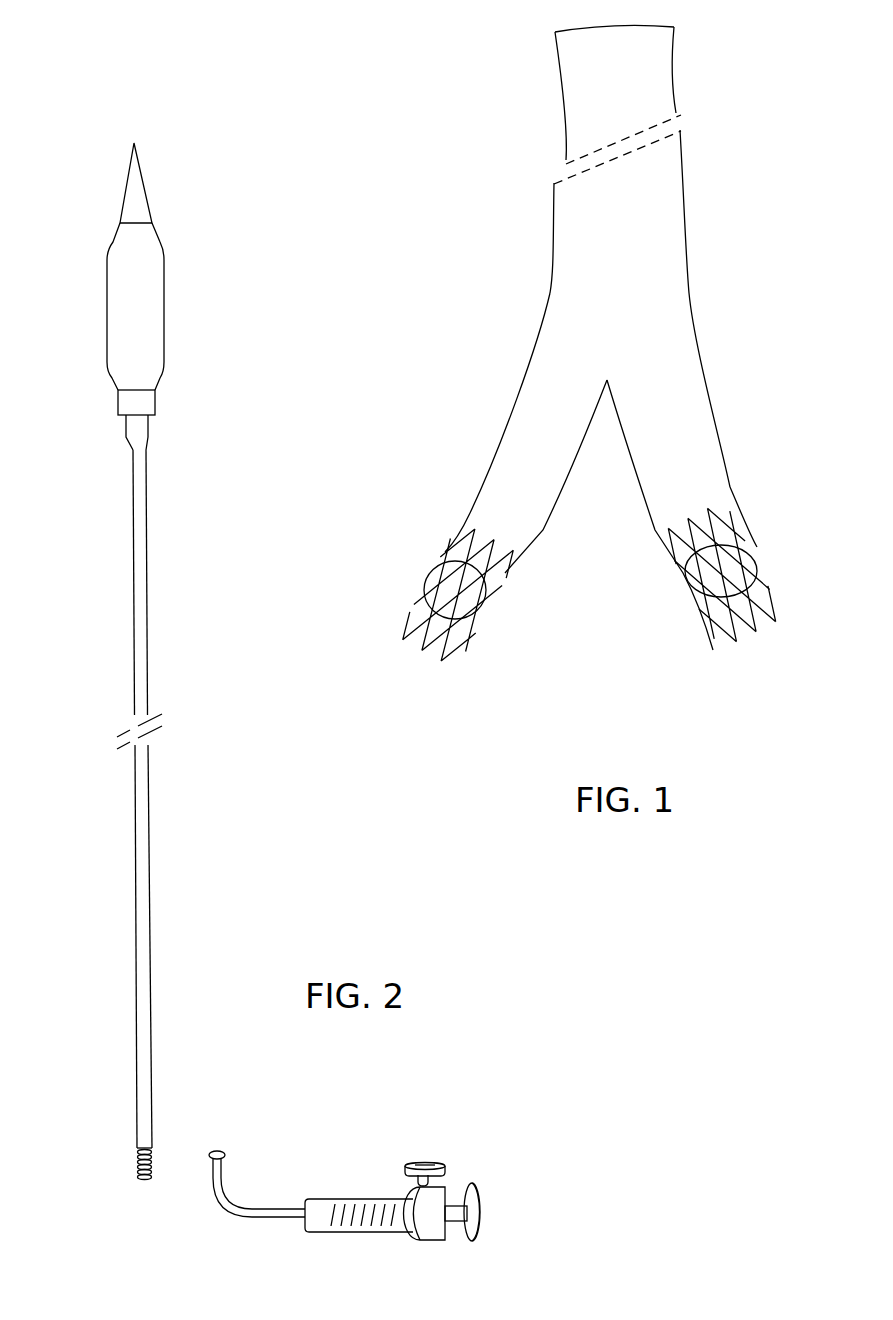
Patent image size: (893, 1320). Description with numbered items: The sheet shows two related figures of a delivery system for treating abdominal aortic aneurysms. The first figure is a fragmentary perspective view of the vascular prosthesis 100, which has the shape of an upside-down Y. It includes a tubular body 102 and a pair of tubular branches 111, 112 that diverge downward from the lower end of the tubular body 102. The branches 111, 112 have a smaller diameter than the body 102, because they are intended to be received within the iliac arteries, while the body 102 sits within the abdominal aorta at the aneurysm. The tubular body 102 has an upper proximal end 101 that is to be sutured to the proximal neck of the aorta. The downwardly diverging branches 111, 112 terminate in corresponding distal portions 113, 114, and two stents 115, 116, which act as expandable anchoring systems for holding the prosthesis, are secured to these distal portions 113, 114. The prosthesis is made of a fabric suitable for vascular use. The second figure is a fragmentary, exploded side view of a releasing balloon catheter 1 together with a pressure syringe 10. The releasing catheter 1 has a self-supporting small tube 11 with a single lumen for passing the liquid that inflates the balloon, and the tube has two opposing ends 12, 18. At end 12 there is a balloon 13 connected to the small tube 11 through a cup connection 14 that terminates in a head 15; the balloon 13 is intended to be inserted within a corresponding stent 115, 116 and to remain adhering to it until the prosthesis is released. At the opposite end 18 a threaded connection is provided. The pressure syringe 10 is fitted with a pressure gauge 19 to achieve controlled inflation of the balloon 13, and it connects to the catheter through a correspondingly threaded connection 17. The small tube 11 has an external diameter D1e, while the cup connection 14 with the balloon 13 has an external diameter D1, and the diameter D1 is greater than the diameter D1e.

In FIG. 2, the releasing balloon catheter 1 is at (158, 857).
In FIG. 2, the pressure syringe 10 is at (302, 1180).
In FIG. 2, the small tube 11 is at (135, 680).
In FIG. 2, the end 12 is at (146, 443).
In FIG. 2, the balloon 13 is at (152, 322).
In FIG. 2, the cup connection 14 is at (155, 400).
In FIG. 2, the head 15 is at (142, 213).
In FIG. 2, the threaded connection 17 is at (218, 1193).
In FIG. 2, the end 18 is at (141, 1165).
In FIG. 2, the pressure gauge 19 is at (426, 1163).
In FIG. 2, the diameter D1 is at (193, 409).
In FIG. 2, the external diameter D1e is at (188, 977).
In FIG. 1, the vascular prosthesis 100 is at (548, 90).
In FIG. 1, the upper proximal end 101 is at (673, 72).
In FIG. 1, the tubular body 102 is at (628, 272).
In FIG. 1, the tubular branch 111 is at (518, 412).
In FIG. 1, the tubular branch 112 is at (715, 418).
In FIG. 1, the distal portion 113 is at (497, 593).
In FIG. 1, the distal portion 114 is at (740, 507).
In FIG. 1, the stent 115 is at (408, 645).
In FIG. 1, the stent 116 is at (705, 638).